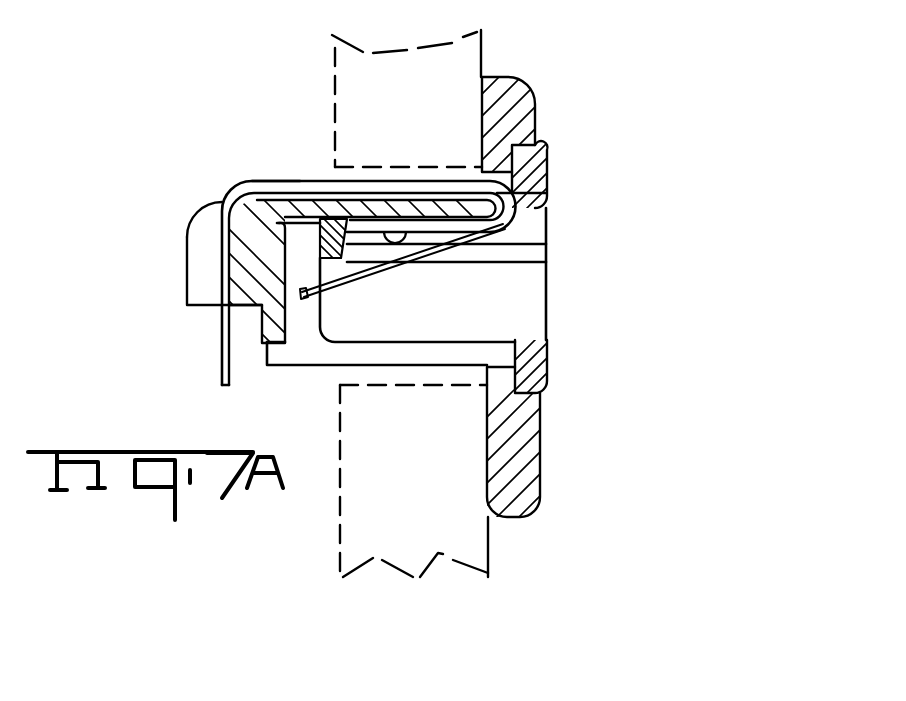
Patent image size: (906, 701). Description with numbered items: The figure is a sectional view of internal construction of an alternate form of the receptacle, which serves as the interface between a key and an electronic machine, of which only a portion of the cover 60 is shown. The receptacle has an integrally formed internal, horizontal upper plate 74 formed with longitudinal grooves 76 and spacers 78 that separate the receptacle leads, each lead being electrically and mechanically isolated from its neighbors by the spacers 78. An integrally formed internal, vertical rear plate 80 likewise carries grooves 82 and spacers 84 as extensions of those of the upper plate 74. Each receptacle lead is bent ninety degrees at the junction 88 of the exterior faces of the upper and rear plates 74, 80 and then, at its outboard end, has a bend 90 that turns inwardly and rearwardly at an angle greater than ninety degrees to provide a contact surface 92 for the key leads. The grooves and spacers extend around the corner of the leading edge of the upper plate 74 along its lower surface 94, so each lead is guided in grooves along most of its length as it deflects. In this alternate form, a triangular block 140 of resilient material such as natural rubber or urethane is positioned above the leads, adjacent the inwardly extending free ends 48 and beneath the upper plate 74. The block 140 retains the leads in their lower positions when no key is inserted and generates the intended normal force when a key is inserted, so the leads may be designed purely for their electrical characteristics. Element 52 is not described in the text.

The outboard ends of the receptacle leads 48 is at (307, 294).
The flange 52 is at (528, 92).
The cover 60 is at (480, 47).
The upper plate 74 is at (355, 207).
The longitudinal grooves 76 is at (263, 183).
The spacers 78 is at (295, 182).
The rear plate 80 is at (235, 230).
The grooves 82 is at (202, 240).
The spacers 84 is at (187, 273).
The junction 88 is at (228, 200).
The bend 90 is at (540, 187).
The contact surfaces 92 is at (345, 278).
The lower surface 94 is at (403, 242).
The triangular block 140 is at (382, 268).